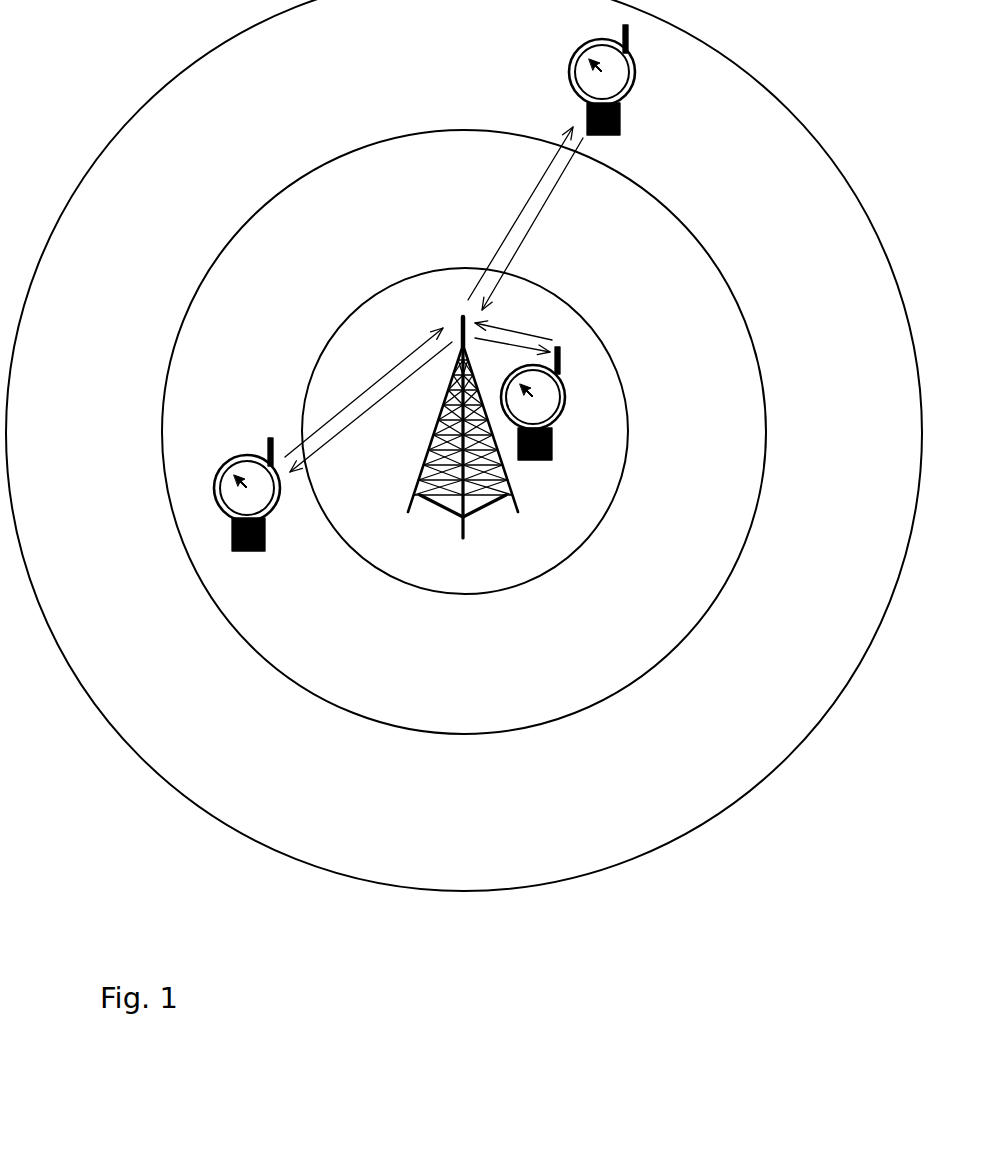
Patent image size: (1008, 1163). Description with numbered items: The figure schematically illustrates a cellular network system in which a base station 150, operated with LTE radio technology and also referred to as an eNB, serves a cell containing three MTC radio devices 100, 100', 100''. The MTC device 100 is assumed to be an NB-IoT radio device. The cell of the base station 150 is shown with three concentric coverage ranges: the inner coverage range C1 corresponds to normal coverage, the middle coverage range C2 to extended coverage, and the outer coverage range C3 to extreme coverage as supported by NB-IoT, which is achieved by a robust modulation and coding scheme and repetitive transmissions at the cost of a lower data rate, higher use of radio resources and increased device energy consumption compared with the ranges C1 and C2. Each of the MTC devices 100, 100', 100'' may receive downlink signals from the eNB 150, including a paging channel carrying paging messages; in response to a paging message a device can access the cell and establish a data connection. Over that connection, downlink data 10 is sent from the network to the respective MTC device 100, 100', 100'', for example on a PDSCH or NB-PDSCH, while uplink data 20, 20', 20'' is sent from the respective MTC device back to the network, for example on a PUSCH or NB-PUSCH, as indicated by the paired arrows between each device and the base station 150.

The MTC radio device 100 is at (629, 93).
The MTC radio device 100' is at (276, 507).
The MTC radio device 100'' is at (557, 427).
The downlink data 10 is at (510, 220).
The uplink data 20 is at (536, 224).
The uplink data 20' is at (364, 392).
The uplink data 20'' is at (513, 314).
The base station 150 is at (438, 512).
The coverage range C1 is at (487, 598).
The coverage range C2 is at (532, 733).
The coverage range C3 is at (590, 880).